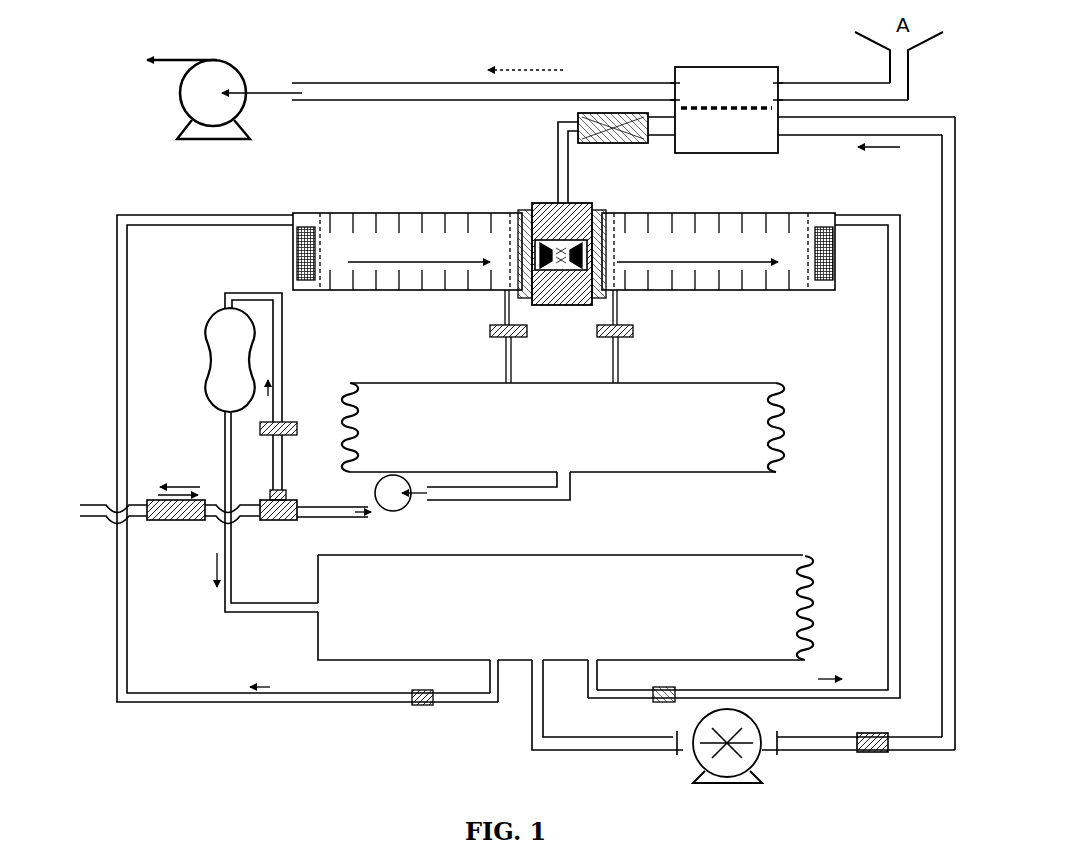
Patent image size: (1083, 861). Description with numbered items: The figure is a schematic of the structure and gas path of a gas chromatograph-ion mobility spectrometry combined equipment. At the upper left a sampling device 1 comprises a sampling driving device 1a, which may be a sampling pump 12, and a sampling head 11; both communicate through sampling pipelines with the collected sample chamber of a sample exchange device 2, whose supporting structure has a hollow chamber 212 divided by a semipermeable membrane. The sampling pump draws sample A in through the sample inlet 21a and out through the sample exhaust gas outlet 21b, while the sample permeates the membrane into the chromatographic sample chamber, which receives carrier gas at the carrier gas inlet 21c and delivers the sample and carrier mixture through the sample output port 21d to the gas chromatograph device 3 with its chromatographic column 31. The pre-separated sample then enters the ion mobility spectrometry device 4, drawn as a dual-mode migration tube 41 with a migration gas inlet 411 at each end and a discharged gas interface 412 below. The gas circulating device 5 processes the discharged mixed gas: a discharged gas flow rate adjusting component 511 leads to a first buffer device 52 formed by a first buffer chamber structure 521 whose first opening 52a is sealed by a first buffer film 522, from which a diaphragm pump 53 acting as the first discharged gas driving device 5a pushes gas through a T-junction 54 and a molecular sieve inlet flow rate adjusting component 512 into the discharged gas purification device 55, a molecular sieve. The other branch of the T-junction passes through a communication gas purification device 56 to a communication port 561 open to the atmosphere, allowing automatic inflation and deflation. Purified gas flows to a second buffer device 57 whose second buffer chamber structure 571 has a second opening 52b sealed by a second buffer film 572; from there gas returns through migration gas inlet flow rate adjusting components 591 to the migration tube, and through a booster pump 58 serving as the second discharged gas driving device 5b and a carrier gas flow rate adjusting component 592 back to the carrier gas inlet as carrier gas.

The sampling device 1 is at (216, 61).
The sampling driving device 1a is at (238, 62).
The sampling pump 12 is at (243, 113).
The sampling head 11 is at (888, 60).
The sample exchange device 2 is at (728, 72).
The hollow chamber 212 is at (753, 82).
The sample inlet 21a is at (781, 96).
The sample exhaust gas outlet 21b is at (674, 90).
The carrier gas inlet 21c is at (781, 124).
The sample output port 21d is at (678, 129).
The gas chromatograph device 3 is at (597, 144).
The chromatographic column 31 is at (618, 144).
The ion mobility spectrometry device 4 is at (400, 213).
The migration tube 41 is at (523, 212).
The migration gas inlet 411 is at (293, 213).
The discharged gas interface 412 is at (506, 294).
The gas circulating device 5 is at (729, 382).
The discharged gas flow rate adjusting component 511 is at (487, 338).
The molecular sieve inlet flow rate adjusting component 512 is at (286, 421).
The first buffer device 52 is at (608, 430).
The first buffer chamber structure 521 is at (621, 446).
The first buffer film 522 is at (784, 402).
The first opening 52a is at (778, 472).
The second opening 52b is at (803, 557).
The diaphragm pump 53 is at (399, 496).
The first discharged gas driving device 5a is at (395, 513).
The T-junction 54 is at (262, 522).
The discharged gas purification device 55 is at (206, 335).
The communication gas purification device 56 is at (174, 540).
The communication port 561 is at (83, 510).
The second buffer device 57 is at (594, 588).
The second buffer chamber structure 571 is at (633, 570).
The second buffer film 572 is at (810, 605).
The booster pump 58 is at (741, 748).
The second discharged gas driving device 5b is at (694, 753).
The migration gas inlet flow rate adjusting component 591 is at (412, 705).
The carrier gas flow rate adjusting component 592 is at (868, 753).